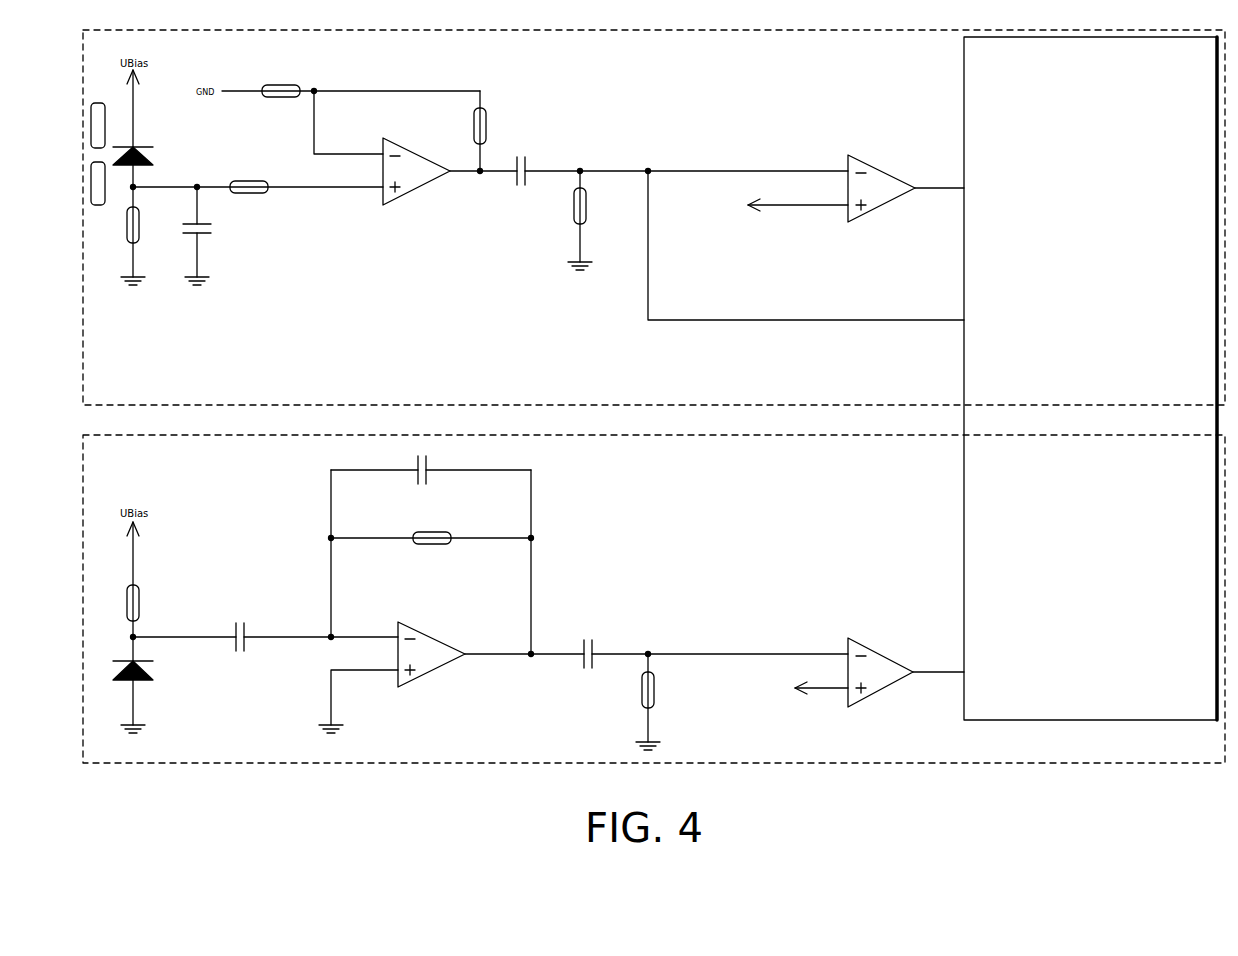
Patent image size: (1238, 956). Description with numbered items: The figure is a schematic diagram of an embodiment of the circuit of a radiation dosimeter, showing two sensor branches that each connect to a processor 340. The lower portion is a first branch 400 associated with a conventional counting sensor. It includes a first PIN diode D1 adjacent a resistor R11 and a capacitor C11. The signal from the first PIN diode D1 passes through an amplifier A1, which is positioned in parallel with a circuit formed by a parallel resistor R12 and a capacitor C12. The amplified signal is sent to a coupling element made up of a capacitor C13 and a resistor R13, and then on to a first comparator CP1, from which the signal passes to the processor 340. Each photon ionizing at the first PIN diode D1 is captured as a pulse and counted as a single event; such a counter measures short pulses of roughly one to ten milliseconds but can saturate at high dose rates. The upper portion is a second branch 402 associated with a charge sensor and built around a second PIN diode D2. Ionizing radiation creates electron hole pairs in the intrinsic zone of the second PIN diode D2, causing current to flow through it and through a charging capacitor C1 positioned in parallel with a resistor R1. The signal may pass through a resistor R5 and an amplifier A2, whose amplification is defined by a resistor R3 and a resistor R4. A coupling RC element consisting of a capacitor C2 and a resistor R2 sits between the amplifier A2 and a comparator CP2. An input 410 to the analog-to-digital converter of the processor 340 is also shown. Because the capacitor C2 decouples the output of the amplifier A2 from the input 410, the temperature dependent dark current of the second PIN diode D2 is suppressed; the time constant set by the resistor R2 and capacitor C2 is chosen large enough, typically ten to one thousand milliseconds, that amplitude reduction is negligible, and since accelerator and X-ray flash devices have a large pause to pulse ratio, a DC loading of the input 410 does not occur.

The processor 340 is at (1090, 378).
The first branch 400 is at (692, 543).
The second branch 402 is at (705, 132).
The input 410 is at (968, 322).
The first PIN diode D1 is at (138, 673).
The second PIN diode D2 is at (160, 137).
The amplifier A1 is at (435, 668).
The amplifier A2 is at (410, 200).
The first comparator CP1 is at (845, 645).
The comparator CP2 is at (837, 217).
The resistor R1 is at (141, 225).
The charging capacitor C1 is at (204, 231).
The resistor R5 is at (249, 180).
The resistor R4 is at (281, 84).
The resistor R3 is at (488, 131).
The capacitor C2 is at (519, 163).
The resistor R2 is at (585, 220).
The resistor R11 is at (144, 603).
The capacitor C11 is at (241, 629).
The capacitor C12 is at (433, 467).
The parallel resistor R12 is at (432, 531).
The capacitor C13 is at (586, 636).
The resistor R13 is at (656, 701).